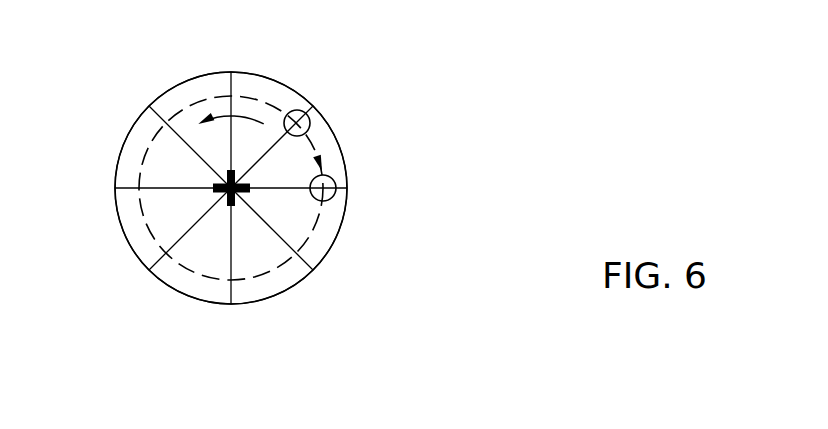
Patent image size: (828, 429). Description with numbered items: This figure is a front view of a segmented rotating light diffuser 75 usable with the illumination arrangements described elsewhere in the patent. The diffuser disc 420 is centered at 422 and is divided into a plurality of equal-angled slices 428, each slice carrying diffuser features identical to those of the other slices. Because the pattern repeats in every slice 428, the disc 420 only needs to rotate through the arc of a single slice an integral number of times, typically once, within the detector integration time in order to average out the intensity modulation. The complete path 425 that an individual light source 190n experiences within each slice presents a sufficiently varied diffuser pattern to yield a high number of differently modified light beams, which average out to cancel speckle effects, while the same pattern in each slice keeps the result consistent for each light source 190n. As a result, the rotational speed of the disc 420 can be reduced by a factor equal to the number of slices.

The rotary stage assembly 75 is at (490, 110).
The diffuser disc 420 is at (305, 97).
The center of the diffuser disc 422 is at (231, 189).
The complete path 425 is at (309, 118).
The equal-angled slice 428 is at (306, 161).
The individual light source 190n is at (328, 187).